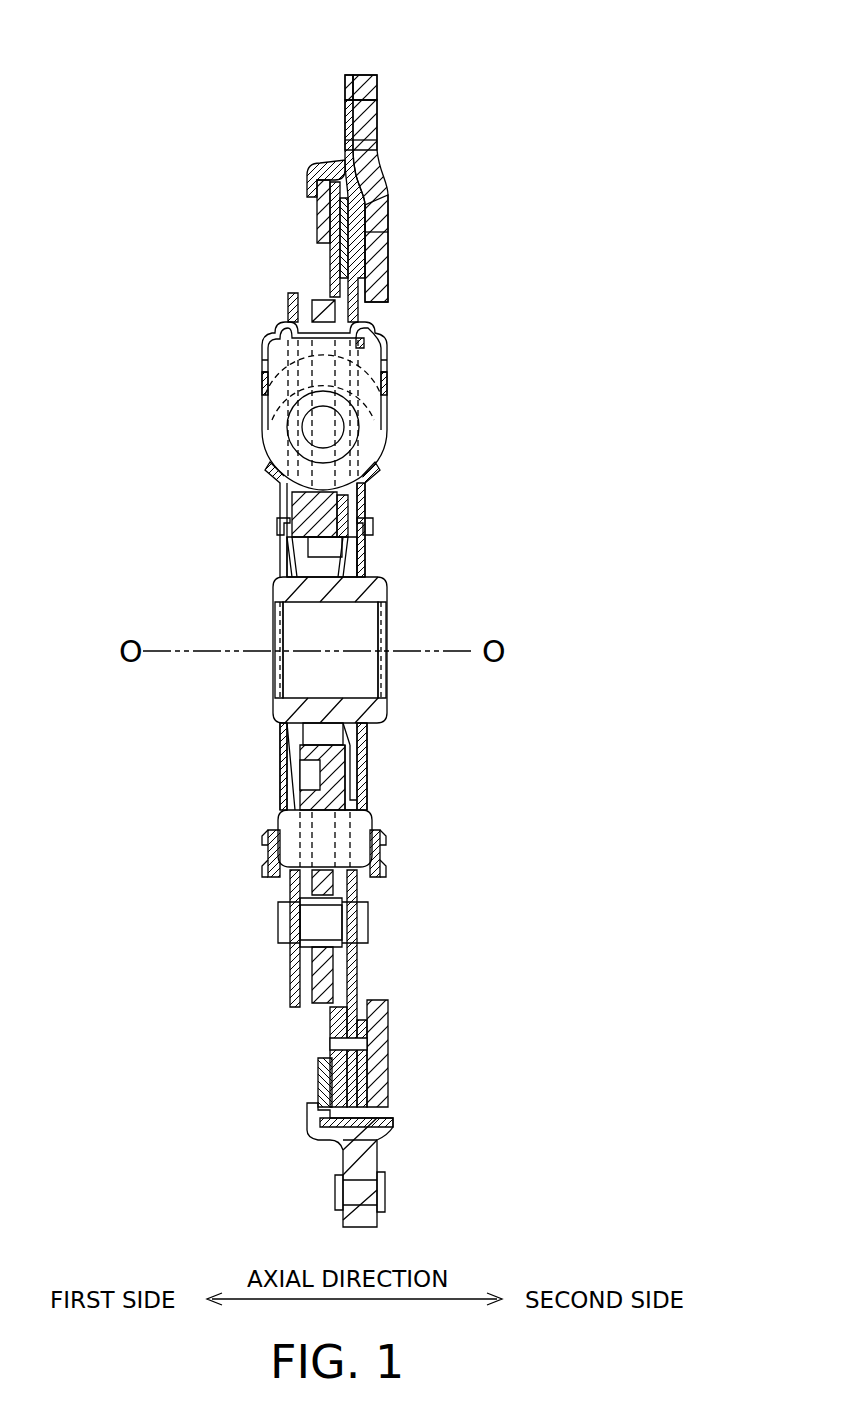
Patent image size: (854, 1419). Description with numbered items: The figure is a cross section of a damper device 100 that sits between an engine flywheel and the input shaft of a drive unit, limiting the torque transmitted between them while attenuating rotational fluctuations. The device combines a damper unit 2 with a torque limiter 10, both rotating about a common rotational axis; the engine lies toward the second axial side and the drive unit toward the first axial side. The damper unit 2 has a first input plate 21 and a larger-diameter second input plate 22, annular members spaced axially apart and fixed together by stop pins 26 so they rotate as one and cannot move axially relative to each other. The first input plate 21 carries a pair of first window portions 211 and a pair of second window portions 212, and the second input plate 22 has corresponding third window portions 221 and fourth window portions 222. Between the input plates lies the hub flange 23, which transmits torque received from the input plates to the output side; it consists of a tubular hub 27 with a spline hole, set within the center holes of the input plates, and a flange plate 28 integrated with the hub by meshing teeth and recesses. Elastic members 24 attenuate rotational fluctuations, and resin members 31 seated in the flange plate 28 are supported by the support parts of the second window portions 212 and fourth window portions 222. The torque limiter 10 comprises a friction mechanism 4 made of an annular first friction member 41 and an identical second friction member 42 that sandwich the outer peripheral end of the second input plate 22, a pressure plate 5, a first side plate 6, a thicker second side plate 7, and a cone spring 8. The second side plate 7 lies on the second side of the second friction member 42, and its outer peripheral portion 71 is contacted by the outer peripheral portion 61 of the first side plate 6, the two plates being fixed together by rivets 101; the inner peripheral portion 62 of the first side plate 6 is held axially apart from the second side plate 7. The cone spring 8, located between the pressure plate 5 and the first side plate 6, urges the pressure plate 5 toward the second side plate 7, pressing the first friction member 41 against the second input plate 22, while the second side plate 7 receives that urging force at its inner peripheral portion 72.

The damper device 100 is at (462, 78).
The torque limiter 10 is at (295, 135).
The damper unit 2 is at (299, 587).
The friction mechanism 4 is at (358, 190).
The first friction member 41 is at (342, 265).
The second friction member 42 is at (372, 238).
The pressure plate 5 is at (335, 253).
The first side plate 6 is at (345, 78).
The outer peripheral portion 61 is at (342, 93).
The inner peripheral portion 62 is at (310, 180).
The second side plate 7 is at (378, 78).
The outer peripheral portion 71 is at (378, 93).
The inner peripheral portion 72 is at (380, 215).
The cone spring 8 is at (322, 215).
The first input plate 21 is at (272, 330).
The second input plate 22 is at (378, 330).
The hub flange 23 is at (385, 580).
The elastic members 24 is at (386, 430).
The stop pins 26 is at (368, 920).
The hub 27 is at (378, 592).
The flange plate 28 is at (338, 310).
The resin members 31 is at (345, 825).
The first window portions 211 is at (265, 464).
The second window portions 212 is at (266, 840).
The third window portions 221 is at (380, 464).
The fourth window portions 222 is at (348, 836).
The rivets 101 is at (382, 1190).